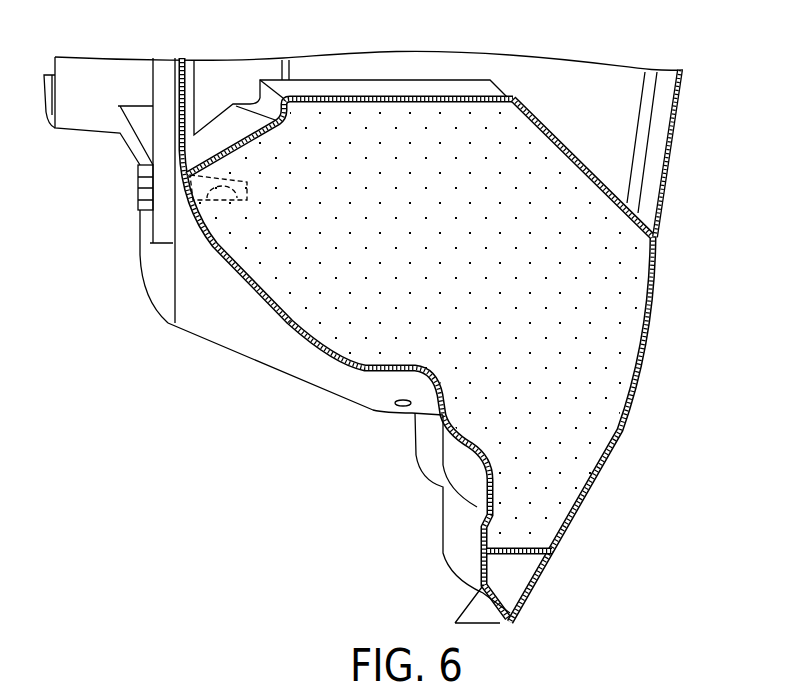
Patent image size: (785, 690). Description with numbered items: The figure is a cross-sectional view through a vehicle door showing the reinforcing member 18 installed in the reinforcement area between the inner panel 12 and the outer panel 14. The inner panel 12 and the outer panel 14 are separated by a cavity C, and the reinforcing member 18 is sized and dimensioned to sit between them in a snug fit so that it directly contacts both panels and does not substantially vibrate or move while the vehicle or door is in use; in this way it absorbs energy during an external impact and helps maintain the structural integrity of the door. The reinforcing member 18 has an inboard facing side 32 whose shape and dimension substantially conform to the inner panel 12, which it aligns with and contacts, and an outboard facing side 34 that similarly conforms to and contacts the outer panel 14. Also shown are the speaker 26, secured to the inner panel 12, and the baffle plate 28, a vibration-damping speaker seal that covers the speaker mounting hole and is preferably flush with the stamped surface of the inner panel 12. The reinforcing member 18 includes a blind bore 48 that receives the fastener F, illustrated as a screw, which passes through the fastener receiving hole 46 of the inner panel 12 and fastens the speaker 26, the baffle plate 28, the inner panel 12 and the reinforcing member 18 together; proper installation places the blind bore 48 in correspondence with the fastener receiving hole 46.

The inner panel 12 is at (185, 63).
The outer panel 14 is at (685, 117).
The reinforcing member 18 is at (357, 70).
The speaker 26 is at (88, 78).
The baffle plate 28 is at (165, 75).
The inboard facing side 32 is at (293, 332).
The outboard facing side 34 is at (655, 259).
The fastener receiving hole 46 is at (139, 183).
The blind bore 48 is at (238, 201).
The cavity C is at (593, 100).
The fastener F is at (137, 201).